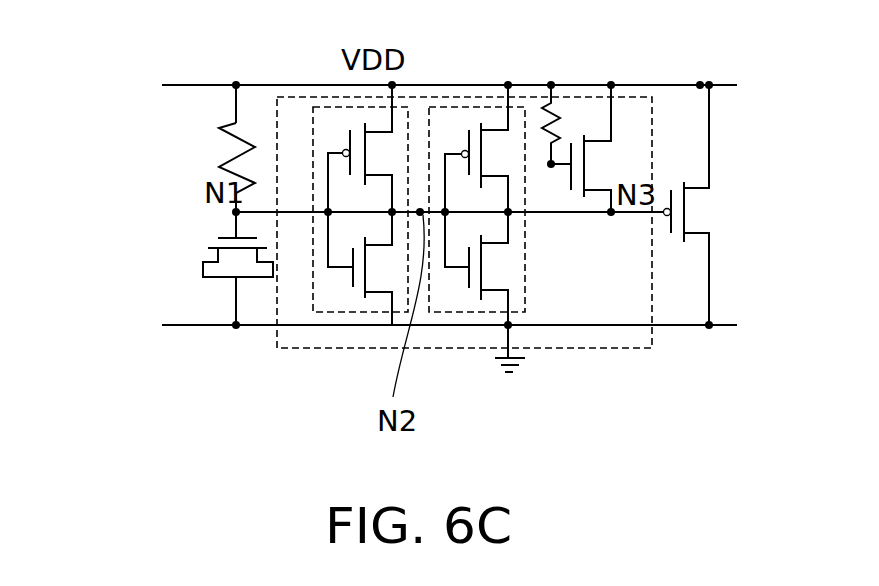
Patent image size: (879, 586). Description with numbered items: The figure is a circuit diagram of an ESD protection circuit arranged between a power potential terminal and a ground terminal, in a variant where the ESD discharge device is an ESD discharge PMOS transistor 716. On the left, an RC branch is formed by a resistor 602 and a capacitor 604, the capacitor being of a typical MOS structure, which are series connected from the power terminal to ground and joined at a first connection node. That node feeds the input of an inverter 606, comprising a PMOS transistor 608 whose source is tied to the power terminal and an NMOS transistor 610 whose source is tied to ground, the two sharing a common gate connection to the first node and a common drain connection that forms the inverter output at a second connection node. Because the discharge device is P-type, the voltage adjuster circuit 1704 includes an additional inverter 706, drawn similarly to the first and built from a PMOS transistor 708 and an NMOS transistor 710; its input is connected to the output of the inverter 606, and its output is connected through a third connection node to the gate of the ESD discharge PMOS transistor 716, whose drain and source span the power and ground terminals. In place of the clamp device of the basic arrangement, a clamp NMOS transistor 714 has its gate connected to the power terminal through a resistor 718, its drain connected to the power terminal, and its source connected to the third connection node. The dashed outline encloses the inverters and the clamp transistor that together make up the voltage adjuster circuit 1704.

The resistor 602 is at (222, 126).
The capacitor 604 is at (223, 237).
The inverter 606 is at (229, 78).
The PMOS transistor 608 is at (365, 133).
The NMOS transistor 610 is at (353, 280).
The additional inverter 706 is at (442, 106).
The PMOS transistor 708 is at (450, 132).
The NMOS transistor 710 is at (470, 277).
The clamp NMOS transistor 714 is at (570, 172).
The ESD discharge PMOS transistor 716 is at (682, 243).
The resistor 718 is at (548, 112).
The voltage adjuster circuit 1704 is at (601, 350).